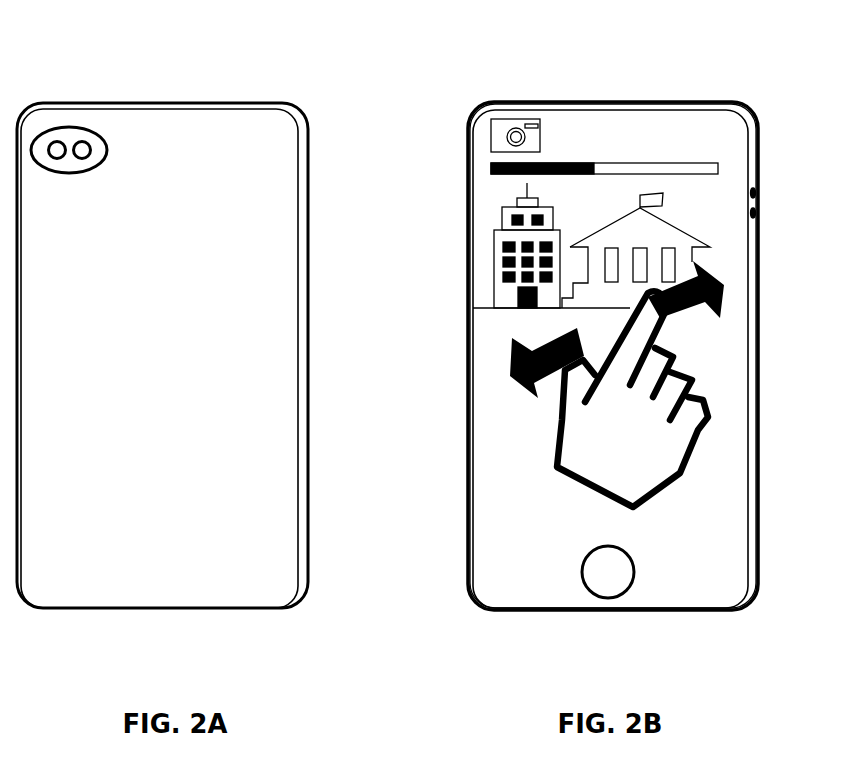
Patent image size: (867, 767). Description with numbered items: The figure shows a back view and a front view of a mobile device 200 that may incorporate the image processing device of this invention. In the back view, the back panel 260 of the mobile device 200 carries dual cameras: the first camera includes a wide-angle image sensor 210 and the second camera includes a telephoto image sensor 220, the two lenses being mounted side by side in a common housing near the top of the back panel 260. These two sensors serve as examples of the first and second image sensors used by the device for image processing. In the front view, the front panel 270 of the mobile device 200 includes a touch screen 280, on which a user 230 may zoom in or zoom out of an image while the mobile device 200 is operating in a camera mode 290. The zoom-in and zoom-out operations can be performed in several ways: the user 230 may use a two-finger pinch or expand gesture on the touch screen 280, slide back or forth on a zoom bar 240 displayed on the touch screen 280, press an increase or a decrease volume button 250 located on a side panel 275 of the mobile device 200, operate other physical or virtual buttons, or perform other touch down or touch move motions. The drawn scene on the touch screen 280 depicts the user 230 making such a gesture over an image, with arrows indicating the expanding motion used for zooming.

In FIG. 2A, the mobile device 200 is at (162, 355).
In FIG. 2B, the mobile device 200 is at (613, 356).
In FIG. 2A, the wide-angle image sensor 210 is at (58, 140).
In FIG. 2A, the telephoto image sensor 220 is at (80, 140).
In FIG. 2B, the user 230 is at (617, 384).
In FIG. 2B, the zoom bar 240 is at (546, 163).
In FIG. 2B, the volume button 250 is at (760, 211).
In FIG. 2A, the back panel 260 is at (255, 469).
In FIG. 2B, the front panel 270 is at (517, 575).
In FIG. 2B, the side panel 275 is at (752, 573).
In FIG. 2B, the touch screen 280 is at (610, 327).
In FIG. 2B, the camera mode 290 is at (502, 133).